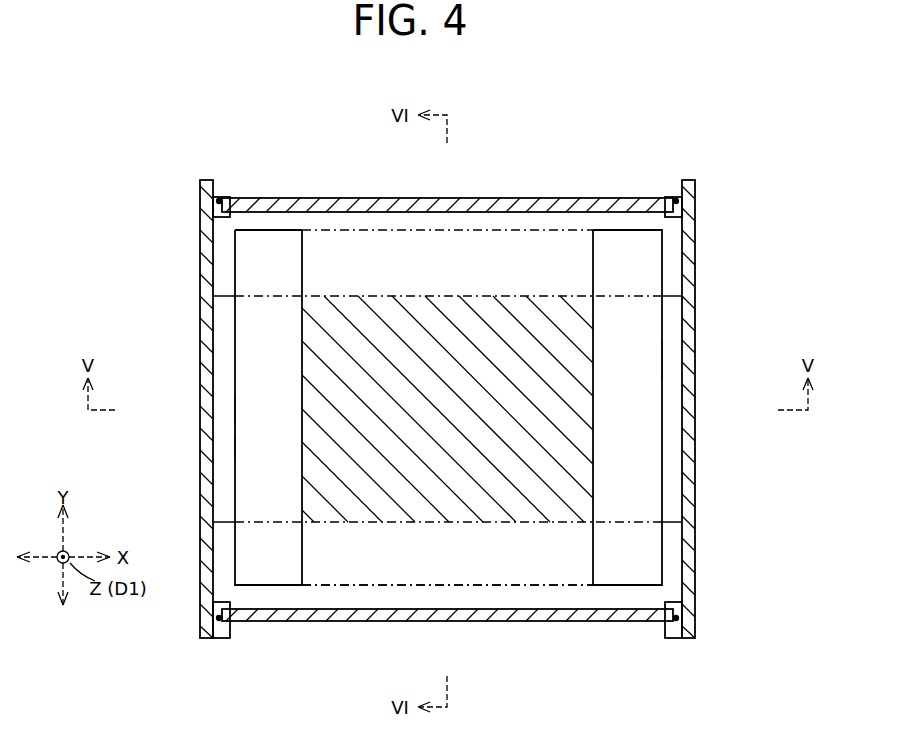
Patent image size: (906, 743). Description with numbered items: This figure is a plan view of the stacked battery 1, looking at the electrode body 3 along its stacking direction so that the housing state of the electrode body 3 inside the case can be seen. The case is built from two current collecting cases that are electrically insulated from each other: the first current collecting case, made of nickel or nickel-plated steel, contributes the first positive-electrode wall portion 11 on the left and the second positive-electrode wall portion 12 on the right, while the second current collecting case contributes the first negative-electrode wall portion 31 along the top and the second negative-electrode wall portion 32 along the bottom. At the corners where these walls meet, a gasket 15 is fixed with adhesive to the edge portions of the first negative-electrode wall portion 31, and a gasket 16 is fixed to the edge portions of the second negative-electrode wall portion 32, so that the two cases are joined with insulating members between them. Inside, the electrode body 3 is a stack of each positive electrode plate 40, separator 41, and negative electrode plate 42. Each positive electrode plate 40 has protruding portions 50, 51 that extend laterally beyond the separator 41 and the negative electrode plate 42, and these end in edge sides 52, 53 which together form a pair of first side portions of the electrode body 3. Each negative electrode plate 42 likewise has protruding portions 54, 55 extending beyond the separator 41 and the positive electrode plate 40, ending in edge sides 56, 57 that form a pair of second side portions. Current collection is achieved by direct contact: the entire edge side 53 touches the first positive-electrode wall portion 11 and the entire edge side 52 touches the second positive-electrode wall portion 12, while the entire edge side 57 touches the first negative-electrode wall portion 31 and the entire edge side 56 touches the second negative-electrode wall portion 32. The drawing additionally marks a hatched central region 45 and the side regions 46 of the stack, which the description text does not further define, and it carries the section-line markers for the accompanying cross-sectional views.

The stacked battery 1 is at (347, 141).
The electrode body 3 is at (270, 192).
The first positive-electrode wall portion 11 is at (208, 366).
The second positive-electrode wall portion 12 is at (686, 451).
The gasket 15 is at (221, 198).
The gasket 16 is at (222, 630).
The first negative-electrode wall portion 31 is at (533, 206).
The second negative-electrode wall portion 32 is at (348, 622).
The positive electrode plate 40 is at (677, 481).
The separator 41 is at (630, 231).
The negative electrode plate 42 is at (531, 586).
The heat generating body 45 is at (373, 318).
The side frame portion 46 is at (296, 230).
The protruding portion 50 is at (677, 396).
The protruding portion 51 is at (222, 449).
The edge side 52 is at (684, 359).
The edge side 53 is at (211, 412).
The protruding portion 54 is at (475, 590).
The protruding portion 55 is at (421, 230).
The edge side 56 is at (424, 612).
The edge side 57 is at (471, 210).